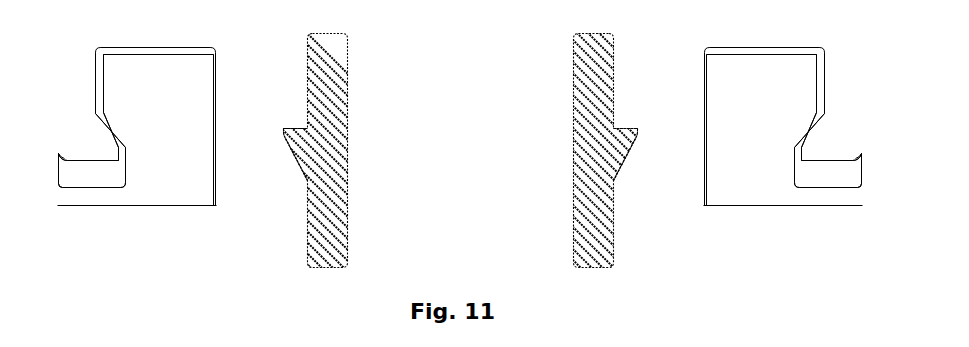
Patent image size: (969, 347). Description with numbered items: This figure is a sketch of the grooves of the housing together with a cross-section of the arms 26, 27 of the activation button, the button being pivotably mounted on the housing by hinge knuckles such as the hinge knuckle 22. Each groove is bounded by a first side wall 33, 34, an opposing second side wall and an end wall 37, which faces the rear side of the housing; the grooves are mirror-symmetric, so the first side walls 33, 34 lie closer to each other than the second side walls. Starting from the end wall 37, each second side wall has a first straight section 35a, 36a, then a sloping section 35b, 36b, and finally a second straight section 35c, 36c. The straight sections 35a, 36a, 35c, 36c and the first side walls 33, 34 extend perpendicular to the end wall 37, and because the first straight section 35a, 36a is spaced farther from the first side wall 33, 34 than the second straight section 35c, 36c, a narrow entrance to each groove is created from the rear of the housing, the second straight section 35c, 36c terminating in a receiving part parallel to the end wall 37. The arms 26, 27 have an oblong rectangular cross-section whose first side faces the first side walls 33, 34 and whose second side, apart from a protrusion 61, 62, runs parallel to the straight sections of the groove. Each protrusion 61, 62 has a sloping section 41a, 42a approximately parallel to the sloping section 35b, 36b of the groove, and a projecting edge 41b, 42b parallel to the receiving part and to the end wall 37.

The hinge knuckle 22 is at (772, 53).
The arm 26 is at (338, 53).
The arm 27 is at (578, 47).
The first side wall 33 is at (215, 72).
The first side wall 34 is at (707, 72).
The first straight section 35a is at (107, 82).
The sloping section 35b is at (107, 128).
The second straight section 35c is at (127, 167).
The first straight section 36a is at (815, 82).
The sloping section 36b is at (815, 128).
The second straight section 36c is at (794, 167).
The end wall 37 is at (148, 53).
The sloping section 41a is at (291, 151).
The projecting edge 41b is at (300, 130).
The sloping section 42a is at (622, 147).
The projecting edge 42b is at (625, 128).
The protrusion 61 is at (302, 140).
The protrusion 62 is at (627, 138).